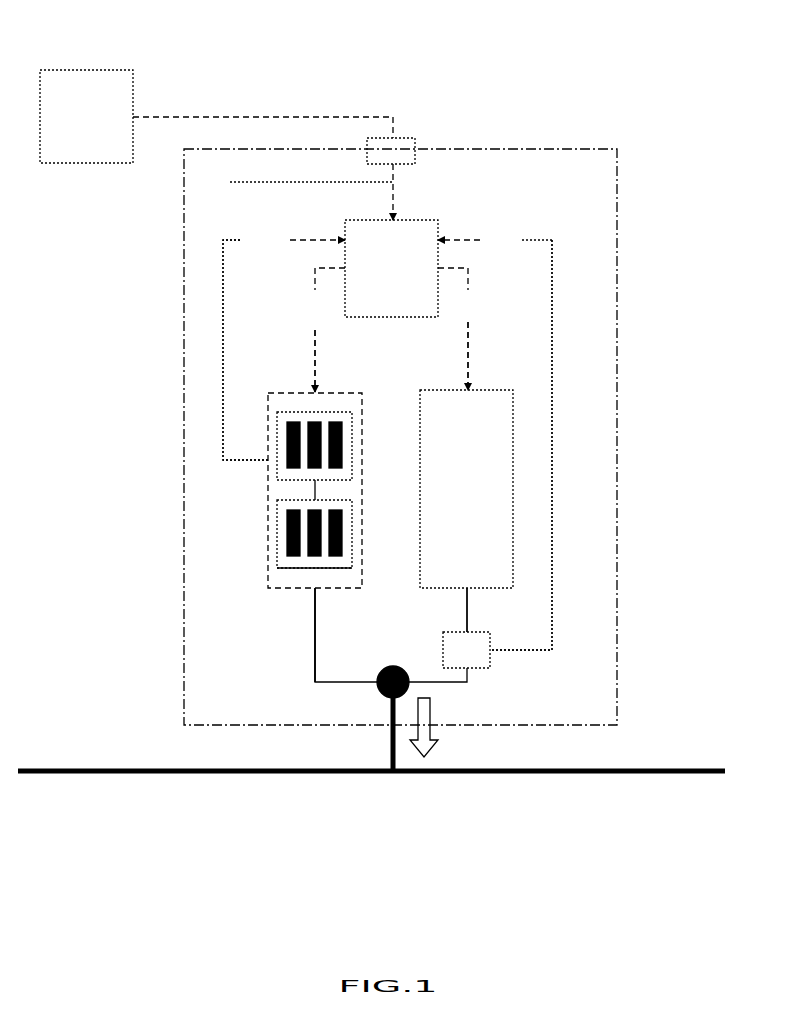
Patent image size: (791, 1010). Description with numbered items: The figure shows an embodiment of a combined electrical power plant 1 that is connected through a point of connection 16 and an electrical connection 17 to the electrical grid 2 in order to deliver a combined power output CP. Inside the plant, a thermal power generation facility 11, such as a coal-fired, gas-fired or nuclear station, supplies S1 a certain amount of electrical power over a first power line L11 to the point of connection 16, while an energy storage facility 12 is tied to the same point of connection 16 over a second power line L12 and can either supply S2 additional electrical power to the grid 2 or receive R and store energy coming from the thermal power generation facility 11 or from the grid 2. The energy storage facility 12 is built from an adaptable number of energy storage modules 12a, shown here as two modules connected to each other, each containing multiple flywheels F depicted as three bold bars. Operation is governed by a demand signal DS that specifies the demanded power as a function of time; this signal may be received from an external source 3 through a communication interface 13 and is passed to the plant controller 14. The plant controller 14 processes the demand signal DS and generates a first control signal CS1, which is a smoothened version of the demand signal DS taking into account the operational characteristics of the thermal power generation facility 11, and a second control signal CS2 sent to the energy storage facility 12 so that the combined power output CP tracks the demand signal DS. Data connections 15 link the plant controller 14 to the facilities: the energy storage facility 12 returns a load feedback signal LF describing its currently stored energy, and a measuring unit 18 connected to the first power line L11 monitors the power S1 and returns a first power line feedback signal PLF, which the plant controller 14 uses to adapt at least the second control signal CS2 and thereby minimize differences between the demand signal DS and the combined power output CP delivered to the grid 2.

The combined electrical power plant 1 is at (618, 522).
The electrical grid 2 is at (170, 775).
The external source 3 is at (86, 116).
The thermal power generation facility 11 is at (466, 489).
The energy storage facility 12 is at (245, 455).
The energy storage module 12a is at (292, 407).
The communication interface 13 is at (408, 135).
The plant controller 14 is at (391, 268).
The data connection 15 is at (387, 440).
The point of connection 16 is at (393, 665).
The electrical connection 17 is at (388, 710).
The measuring unit 18 is at (441, 657).
The demand signal DS is at (266, 180).
The first control signal CS1 is at (472, 352).
The second control signal CS2 is at (322, 357).
The load feedback signal LF is at (220, 405).
The first power line feedback signal PLF is at (553, 470).
The flywheel F is at (345, 530).
The combined power output CP is at (432, 715).
The first power line L11 is at (475, 608).
The supplied power of thermal facility S1 is at (574, 610).
The second power line L12 is at (313, 633).
The supplied additional power of storage facility S2 is at (262, 635).
The received power R is at (279, 635).